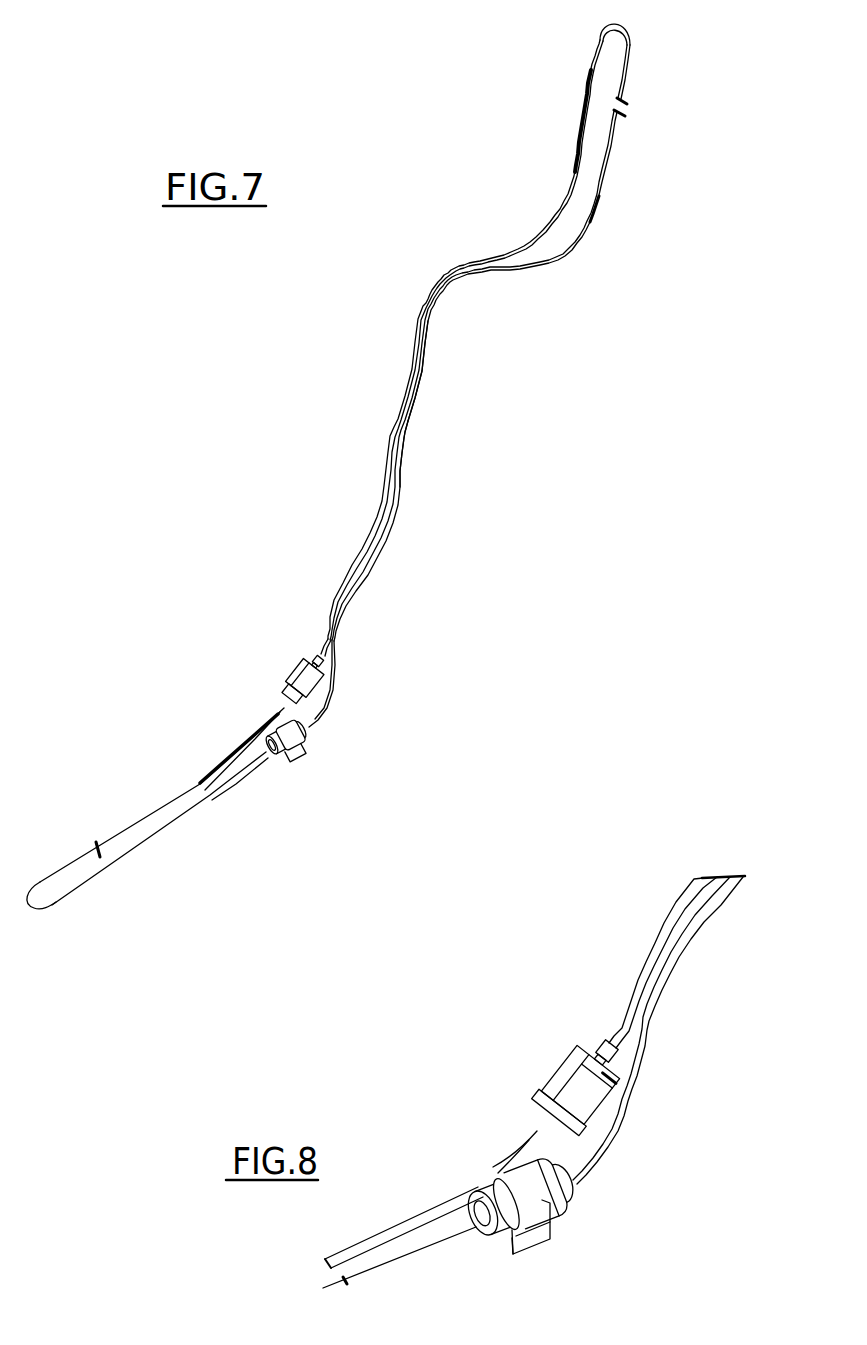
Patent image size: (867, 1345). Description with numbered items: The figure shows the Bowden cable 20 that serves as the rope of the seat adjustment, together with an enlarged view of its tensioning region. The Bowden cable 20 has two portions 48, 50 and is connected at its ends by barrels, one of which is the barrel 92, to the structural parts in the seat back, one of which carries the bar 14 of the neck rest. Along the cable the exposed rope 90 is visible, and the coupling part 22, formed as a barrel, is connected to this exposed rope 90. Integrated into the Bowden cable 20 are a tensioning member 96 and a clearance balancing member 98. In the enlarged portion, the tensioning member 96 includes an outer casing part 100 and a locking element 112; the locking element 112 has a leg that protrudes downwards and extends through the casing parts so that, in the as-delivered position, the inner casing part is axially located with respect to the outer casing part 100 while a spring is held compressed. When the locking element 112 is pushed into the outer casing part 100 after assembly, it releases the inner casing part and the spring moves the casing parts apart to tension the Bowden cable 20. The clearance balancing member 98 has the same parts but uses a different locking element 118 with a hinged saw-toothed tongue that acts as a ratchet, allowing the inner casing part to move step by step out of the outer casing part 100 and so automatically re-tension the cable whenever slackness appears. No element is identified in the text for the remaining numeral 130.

In FIG. 7, the bar 14 is at (624, 117).
In FIG. 7, the barrel 92 is at (625, 100).
In FIG. 7, the Bowden cable 20 is at (361, 500).
In FIG. 8, the Bowden cable 20 is at (638, 958).
In FIG. 7, the portion 48 is at (394, 446).
In FIG. 7, the portion 50 is at (400, 475).
In FIG. 7, the tensioning member 96 is at (291, 662).
In FIG. 8, the tensioning member 96 is at (560, 1053).
In FIG. 7, the clearance balancing member 98 is at (312, 745).
In FIG. 8, the clearance balancing member 98 is at (577, 1209).
In FIG. 7, the coupling part 22 is at (98, 845).
In FIG. 7, the exposed rope 90 is at (178, 818).
In FIG. 8, the outer casing part 100 is at (605, 1053).
In FIG. 8, the locking element 112 is at (571, 1037).
In FIG. 8, the locking element 118 is at (498, 1172).
In FIG. 8, the bracket 130 is at (545, 1232).